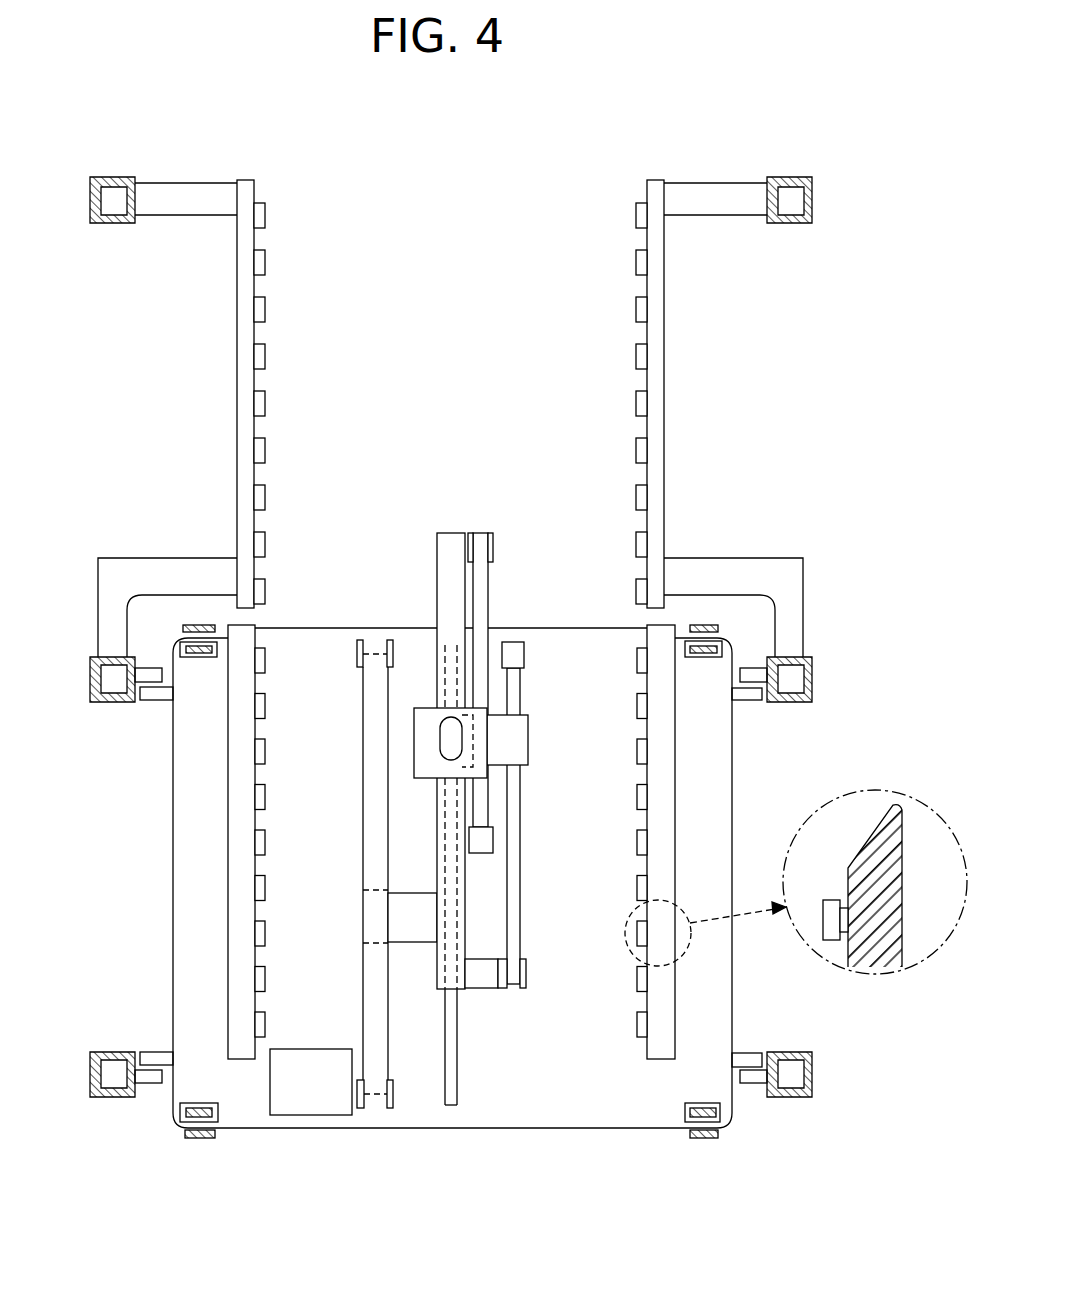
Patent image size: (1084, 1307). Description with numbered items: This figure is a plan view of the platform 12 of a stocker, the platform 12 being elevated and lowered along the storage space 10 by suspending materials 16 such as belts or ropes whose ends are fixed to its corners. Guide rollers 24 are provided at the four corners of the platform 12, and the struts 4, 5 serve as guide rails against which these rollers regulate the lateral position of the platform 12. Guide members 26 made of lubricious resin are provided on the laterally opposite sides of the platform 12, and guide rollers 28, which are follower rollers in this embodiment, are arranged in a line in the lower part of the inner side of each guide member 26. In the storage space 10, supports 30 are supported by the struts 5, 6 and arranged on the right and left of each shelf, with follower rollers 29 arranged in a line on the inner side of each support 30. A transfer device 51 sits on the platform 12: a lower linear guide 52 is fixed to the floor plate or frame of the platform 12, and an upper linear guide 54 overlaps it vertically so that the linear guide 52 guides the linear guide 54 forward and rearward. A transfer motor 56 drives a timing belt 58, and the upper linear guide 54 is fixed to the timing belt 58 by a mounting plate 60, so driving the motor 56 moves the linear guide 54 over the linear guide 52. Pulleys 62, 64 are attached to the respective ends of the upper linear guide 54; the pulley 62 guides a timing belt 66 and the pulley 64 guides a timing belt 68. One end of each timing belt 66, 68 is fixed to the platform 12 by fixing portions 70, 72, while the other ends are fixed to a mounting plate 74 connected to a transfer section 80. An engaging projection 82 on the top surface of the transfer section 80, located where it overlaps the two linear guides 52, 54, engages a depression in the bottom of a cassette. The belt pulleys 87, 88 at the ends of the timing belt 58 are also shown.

The strut 4 is at (113, 1097).
The strut 5 is at (113, 702).
The strut 6 is at (113, 223).
The storage space 10 is at (754, 353).
The platform 12 is at (503, 1162).
The suspending materials 16 is at (215, 650).
The guide rollers 24 is at (150, 668).
The guide members 26 is at (245, 918).
The guide rollers 28 is at (265, 660).
The follower rollers 29 is at (265, 215).
The supports 30 is at (245, 385).
The transfer device 51 is at (472, 1089).
The linear guide 52 is at (457, 1030).
The linear guide 54 is at (450, 572).
The transfer motor 56 is at (308, 1092).
The timing belt 58 is at (375, 1014).
The mounting plate 60 is at (417, 903).
The pulley 62 is at (493, 546).
The pulley 64 is at (527, 972).
The timing belt 66 is at (488, 590).
The timing belt 68 is at (520, 849).
The fixing portion 70 is at (481, 853).
The fixing portion 72 is at (522, 655).
The mounting plate 74 is at (515, 744).
The transfer section 80 is at (422, 718).
The engaging projection 82 is at (440, 754).
The upper pulley 87 is at (357, 655).
The lower pulley 88 is at (370, 1094).